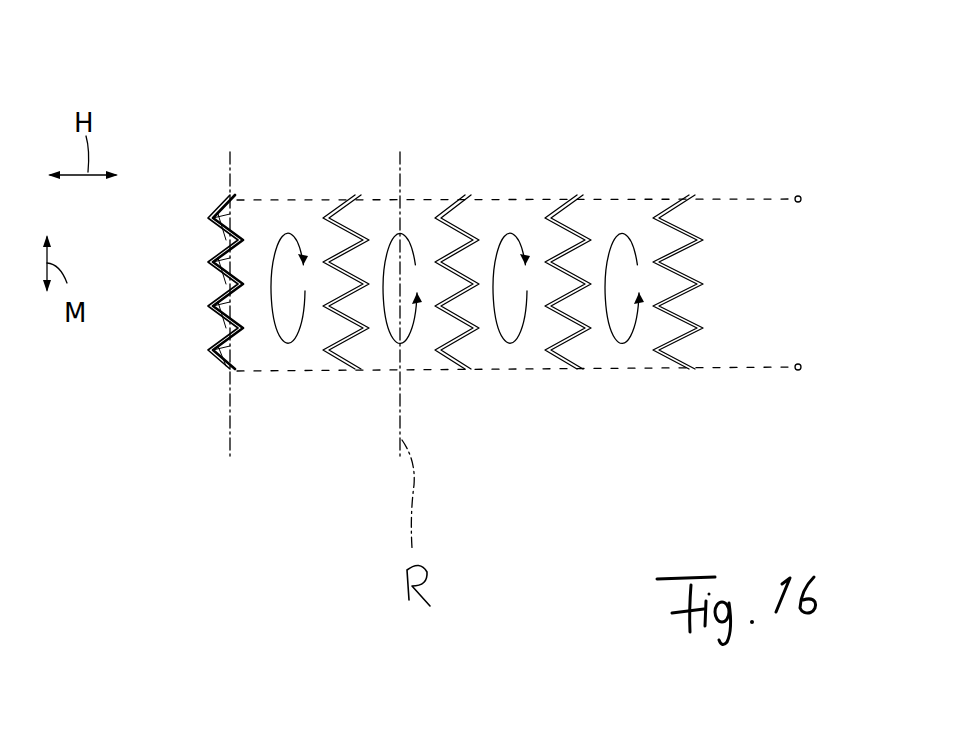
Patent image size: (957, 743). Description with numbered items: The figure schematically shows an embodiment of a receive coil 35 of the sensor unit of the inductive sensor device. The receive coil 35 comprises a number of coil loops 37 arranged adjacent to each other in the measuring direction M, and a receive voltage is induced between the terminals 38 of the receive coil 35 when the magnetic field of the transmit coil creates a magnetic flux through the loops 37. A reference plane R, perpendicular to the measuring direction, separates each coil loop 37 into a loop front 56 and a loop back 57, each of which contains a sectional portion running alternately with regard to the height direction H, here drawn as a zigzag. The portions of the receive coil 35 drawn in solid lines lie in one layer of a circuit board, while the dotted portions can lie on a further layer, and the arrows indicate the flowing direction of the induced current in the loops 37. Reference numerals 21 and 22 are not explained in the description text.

The spring element 21 is at (228, 340).
The center line of spring element 22 is at (232, 333).
The receive coil 35 is at (728, 110).
The coil loops 37 is at (619, 182).
The terminals 38 is at (801, 202).
The loop front 56 is at (323, 183).
The loop back 57 is at (441, 190).